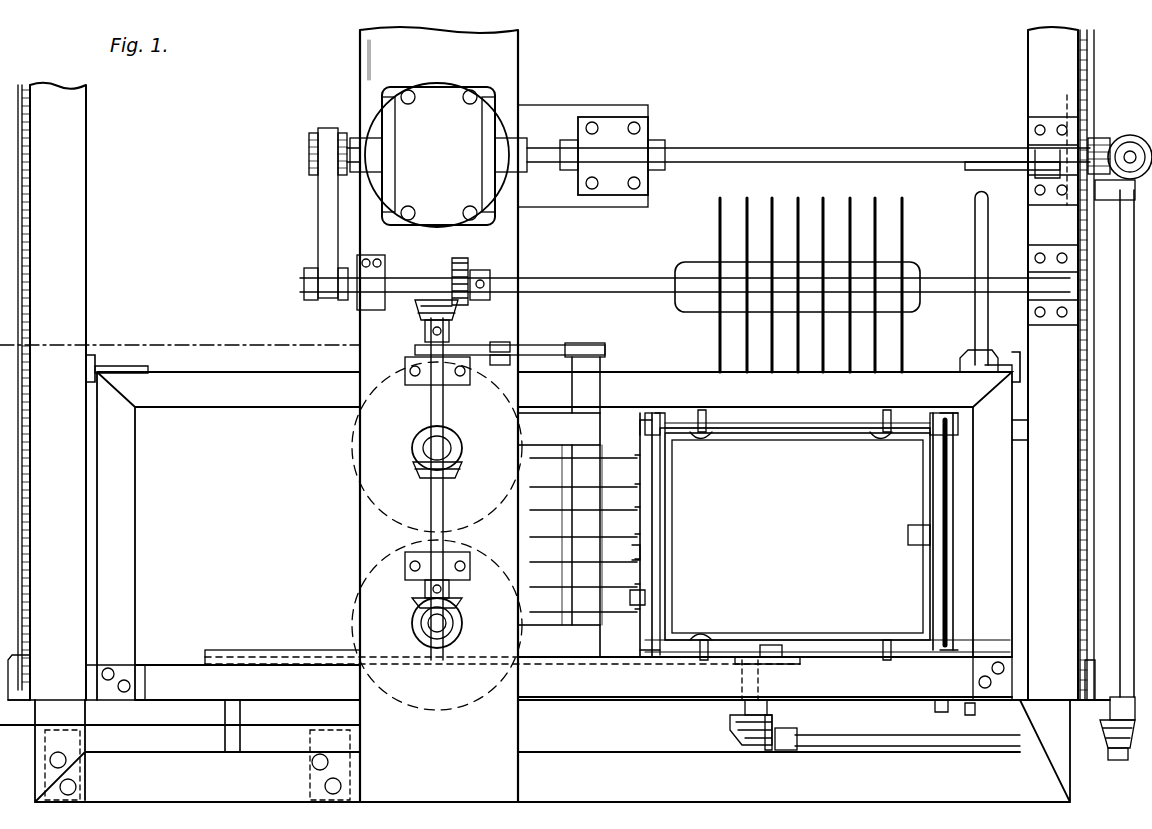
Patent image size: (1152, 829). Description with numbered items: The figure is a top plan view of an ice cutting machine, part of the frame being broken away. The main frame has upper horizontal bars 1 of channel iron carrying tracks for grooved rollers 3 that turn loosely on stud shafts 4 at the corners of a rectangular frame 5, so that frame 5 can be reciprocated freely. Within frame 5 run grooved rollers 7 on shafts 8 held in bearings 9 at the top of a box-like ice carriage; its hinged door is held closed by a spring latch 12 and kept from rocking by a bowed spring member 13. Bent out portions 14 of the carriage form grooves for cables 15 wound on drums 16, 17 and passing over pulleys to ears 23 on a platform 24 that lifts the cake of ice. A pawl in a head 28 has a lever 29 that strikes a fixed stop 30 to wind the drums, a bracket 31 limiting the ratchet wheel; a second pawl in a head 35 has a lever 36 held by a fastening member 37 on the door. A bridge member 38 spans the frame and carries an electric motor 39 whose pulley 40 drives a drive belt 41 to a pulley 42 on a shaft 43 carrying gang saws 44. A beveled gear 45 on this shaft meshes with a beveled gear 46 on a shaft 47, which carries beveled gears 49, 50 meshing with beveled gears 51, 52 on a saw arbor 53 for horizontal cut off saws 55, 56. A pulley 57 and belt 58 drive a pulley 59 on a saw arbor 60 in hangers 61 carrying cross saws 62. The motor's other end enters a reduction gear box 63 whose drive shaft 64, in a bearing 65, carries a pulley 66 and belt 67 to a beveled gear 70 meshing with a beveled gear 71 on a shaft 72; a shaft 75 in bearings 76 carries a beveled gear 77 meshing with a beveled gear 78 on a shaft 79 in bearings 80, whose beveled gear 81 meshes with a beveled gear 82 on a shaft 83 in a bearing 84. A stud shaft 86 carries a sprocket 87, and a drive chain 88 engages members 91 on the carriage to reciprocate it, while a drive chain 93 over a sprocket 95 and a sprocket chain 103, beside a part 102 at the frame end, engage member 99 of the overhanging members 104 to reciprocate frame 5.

The upper horizontal bars 1 is at (73, 160).
The grooved rollers 3 is at (92, 355).
The stud shafts 4 is at (112, 366).
The rectangular frame 5 is at (506, 522).
The grooved rollers 7 is at (655, 413).
The shafts 8 is at (953, 510).
The bearings 9 is at (955, 430).
The spring latch 12 is at (660, 535).
The bowed spring member 13 is at (910, 528).
The bent out portions 14 is at (702, 440).
The cables 15 is at (702, 410).
The drum 16 is at (752, 423).
The drum 17 is at (845, 660).
The ears 23 is at (705, 440).
The platform 24 is at (797, 536).
The head 28 is at (967, 355).
The lever 29 is at (975, 216).
The fixed stop 30 is at (972, 168).
The bracket 31 is at (968, 455).
The head 35 is at (640, 432).
The lever 36 is at (660, 572).
The fastening member 37 is at (650, 597).
The bridge member 38 is at (393, 402).
The electric motor 39 is at (438, 155).
The pulley 40 is at (310, 140).
The drive belt 41 is at (330, 188).
The pulley 42 is at (304, 278).
The shaft 43 is at (398, 250).
The gang saws 44 is at (775, 210).
The beveled gear 45 is at (462, 262).
The beveled gear 46 is at (420, 316).
The shaft 47 is at (431, 500).
The beveled gear 49 is at (458, 468).
The beveled gear 50 is at (416, 606).
The beveled gear 51 is at (413, 440).
The beveled gear 52 is at (460, 620).
The saw arbor 53 is at (437, 632).
The cut off saw 55 is at (357, 443).
The cut off saw 56 is at (356, 602).
The pulley 57 is at (415, 350).
The belt 58 is at (475, 345).
The pulley 59 is at (580, 343).
The saw arbor 60 is at (602, 365).
The hangers 61 is at (559, 535).
The saws 62 is at (655, 548).
The reduction gear box 63 is at (591, 156).
The drive shaft 64 is at (762, 150).
The bearing 65 is at (1032, 130).
The pulley 66 is at (1082, 150).
The belt 67 is at (1100, 138).
The beveled gear 70 is at (1125, 135).
The beveled gear 71 is at (1130, 150).
The shaft 72 is at (1058, 180).
The shaft 75 is at (1120, 310).
The bearings 76 is at (1112, 449).
The beveled gear 77 is at (1120, 736).
The beveled gear 78 is at (1122, 763).
The shaft 79 is at (920, 740).
The bearings 80 is at (788, 750).
The beveled gear 81 is at (768, 750).
The beveled gear 82 is at (768, 720).
The shaft 83 is at (742, 690).
The bearing 84 is at (730, 718).
The stud shaft 86 is at (228, 714).
The sprocket 87 is at (210, 650).
The drive chain 88 is at (290, 655).
The members 91 is at (783, 645).
The drive chain 93 is at (1080, 446).
The sprocket 95 is at (775, 664).
The member 99 is at (1092, 660).
The bracket 102 is at (30, 655).
The sprocket chain 103 is at (30, 262).
The overhanging members 104 is at (56, 700).